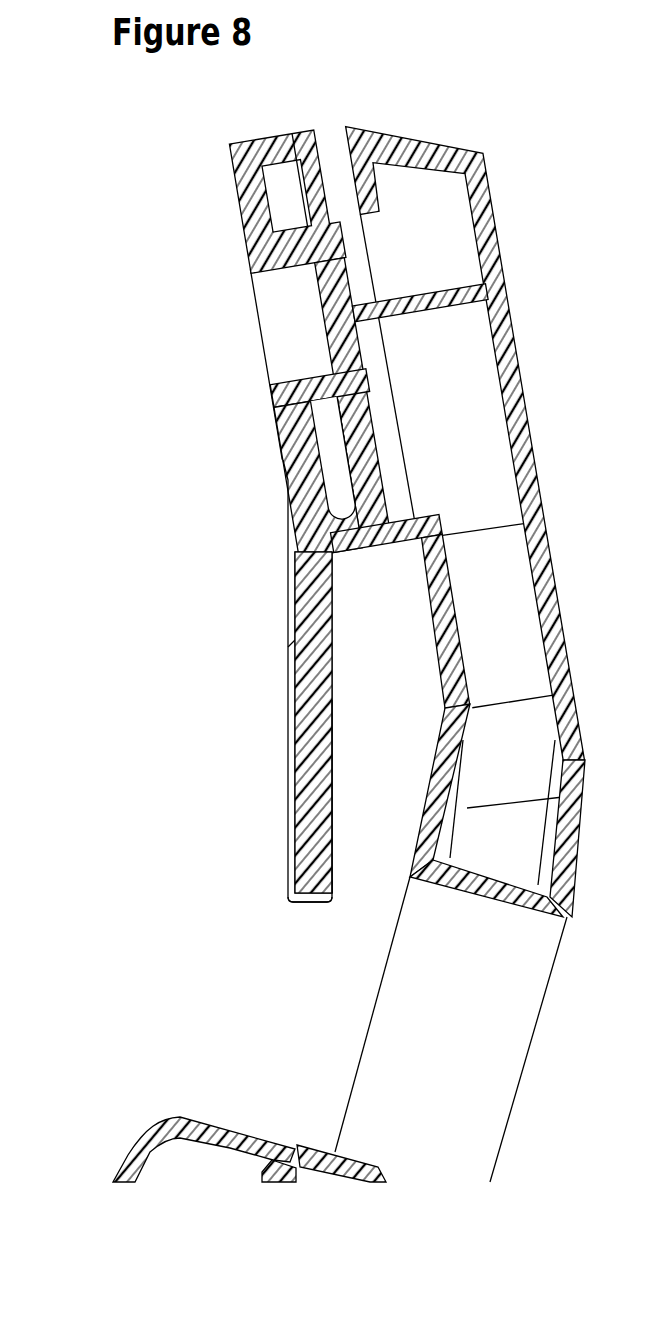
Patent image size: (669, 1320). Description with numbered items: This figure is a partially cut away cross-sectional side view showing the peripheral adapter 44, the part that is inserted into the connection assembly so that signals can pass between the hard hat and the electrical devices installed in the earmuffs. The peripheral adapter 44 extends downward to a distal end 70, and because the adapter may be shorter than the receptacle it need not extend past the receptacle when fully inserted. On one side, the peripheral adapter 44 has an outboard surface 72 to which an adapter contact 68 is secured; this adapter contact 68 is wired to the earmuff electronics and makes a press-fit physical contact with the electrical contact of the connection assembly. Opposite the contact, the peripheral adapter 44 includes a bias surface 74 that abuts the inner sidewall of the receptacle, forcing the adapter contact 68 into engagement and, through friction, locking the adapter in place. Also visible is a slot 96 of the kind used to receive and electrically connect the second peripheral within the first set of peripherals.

The slot 96 is at (330, 91).
The outboard surface 72 is at (292, 572).
The adapter contact 68 is at (290, 735).
The peripheral adapter 44 is at (377, 667).
The bias surface 74 is at (333, 793).
The distal end 70 is at (305, 902).